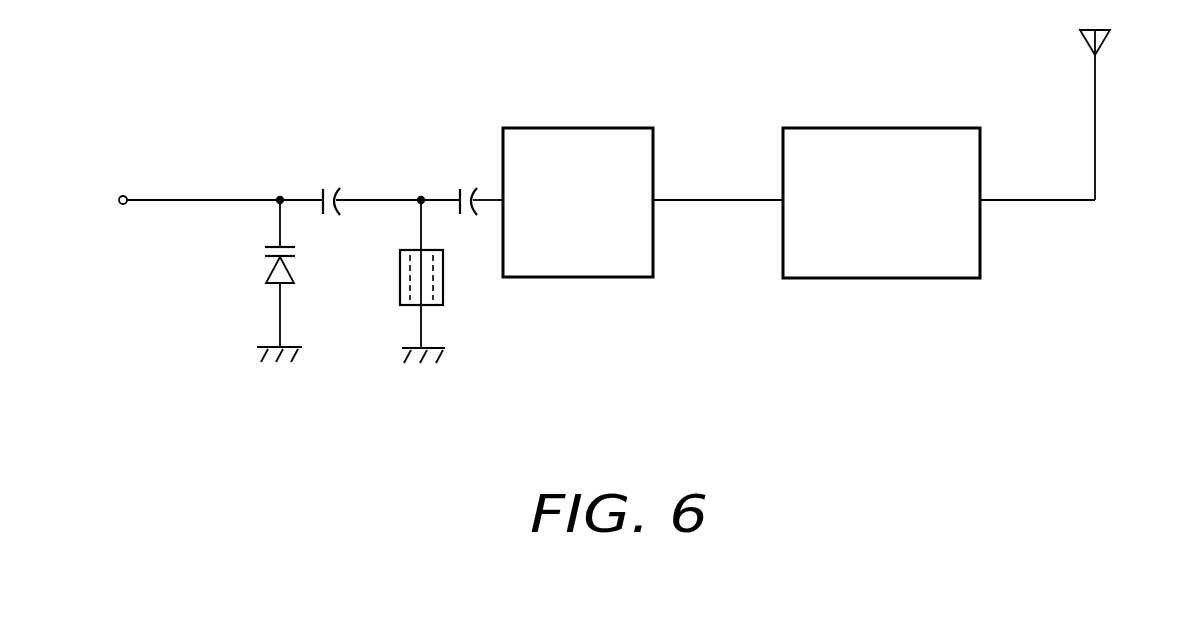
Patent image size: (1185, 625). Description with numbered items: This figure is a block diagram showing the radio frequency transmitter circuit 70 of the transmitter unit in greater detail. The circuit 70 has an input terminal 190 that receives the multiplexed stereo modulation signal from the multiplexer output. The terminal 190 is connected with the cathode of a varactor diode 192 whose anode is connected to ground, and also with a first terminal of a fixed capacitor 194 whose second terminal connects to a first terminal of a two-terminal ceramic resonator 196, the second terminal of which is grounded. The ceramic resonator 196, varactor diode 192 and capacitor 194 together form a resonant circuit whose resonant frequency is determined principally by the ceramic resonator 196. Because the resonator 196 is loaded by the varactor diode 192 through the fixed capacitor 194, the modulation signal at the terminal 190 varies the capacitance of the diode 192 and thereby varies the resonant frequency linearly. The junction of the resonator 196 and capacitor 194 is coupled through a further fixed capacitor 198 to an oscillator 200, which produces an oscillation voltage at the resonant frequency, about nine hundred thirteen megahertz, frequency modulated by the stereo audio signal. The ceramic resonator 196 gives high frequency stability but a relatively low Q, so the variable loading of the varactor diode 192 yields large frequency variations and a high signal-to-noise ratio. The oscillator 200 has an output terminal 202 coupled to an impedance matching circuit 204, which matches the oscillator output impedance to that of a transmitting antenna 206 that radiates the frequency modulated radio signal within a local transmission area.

The radio frequency transmitter circuit 70 is at (563, 58).
The input terminal 190 is at (125, 196).
The varactor diode 192 is at (268, 286).
The fixed capacitor 194 is at (332, 190).
The ceramic resonator 196 is at (443, 283).
The fixed capacitor 198 is at (470, 187).
The oscillator 200 is at (585, 128).
The output terminal 202 is at (700, 200).
The impedance matching circuit 204 is at (873, 128).
The transmitting antenna 206 is at (1097, 85).